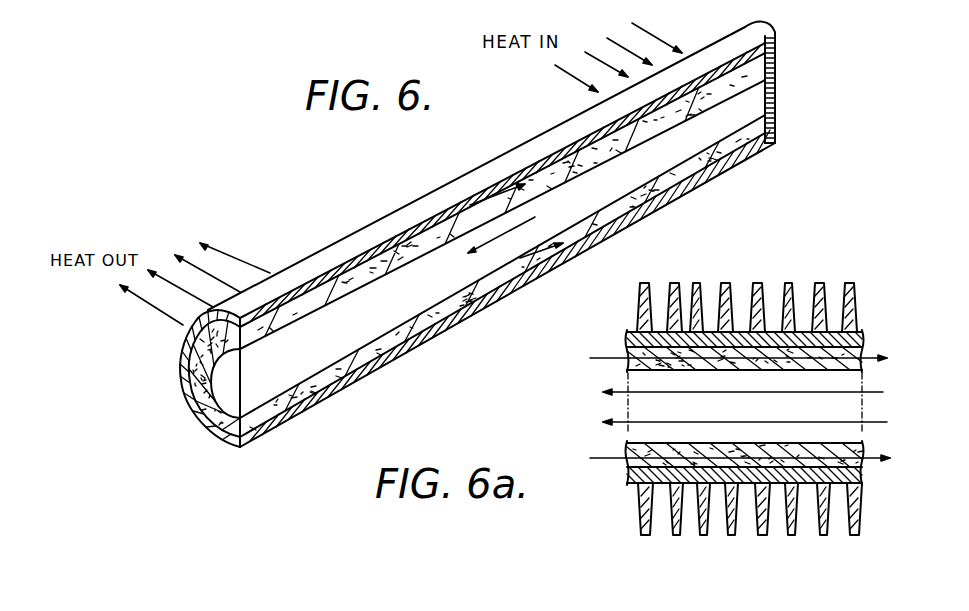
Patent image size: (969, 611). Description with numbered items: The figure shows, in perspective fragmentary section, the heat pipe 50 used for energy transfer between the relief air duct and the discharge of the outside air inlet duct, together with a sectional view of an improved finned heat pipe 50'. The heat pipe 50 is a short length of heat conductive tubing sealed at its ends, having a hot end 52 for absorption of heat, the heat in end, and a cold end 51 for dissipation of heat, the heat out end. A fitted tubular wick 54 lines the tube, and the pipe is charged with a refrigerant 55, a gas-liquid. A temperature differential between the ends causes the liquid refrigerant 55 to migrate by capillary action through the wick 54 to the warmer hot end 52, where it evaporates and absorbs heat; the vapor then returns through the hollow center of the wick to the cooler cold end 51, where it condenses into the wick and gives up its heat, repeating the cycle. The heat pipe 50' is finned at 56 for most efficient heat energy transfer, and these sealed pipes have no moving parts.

In FIG. 6, the heat pipe 50 is at (486, 234).
In FIG. 6a, the finned heat pipe 50' is at (734, 404).
In FIG. 6, the cold end 51 is at (239, 387).
In FIG. 6, the hot end 52 is at (734, 100).
In FIG. 6, the tubular wick 54 is at (655, 190).
In FIG. 6a, the tubular wick 54 is at (843, 368).
In FIG. 6, the refrigerant 55 is at (610, 193).
In FIG. 6a, the refrigerant 55 is at (670, 405).
In FIG. 6a, the fins 56 is at (785, 532).